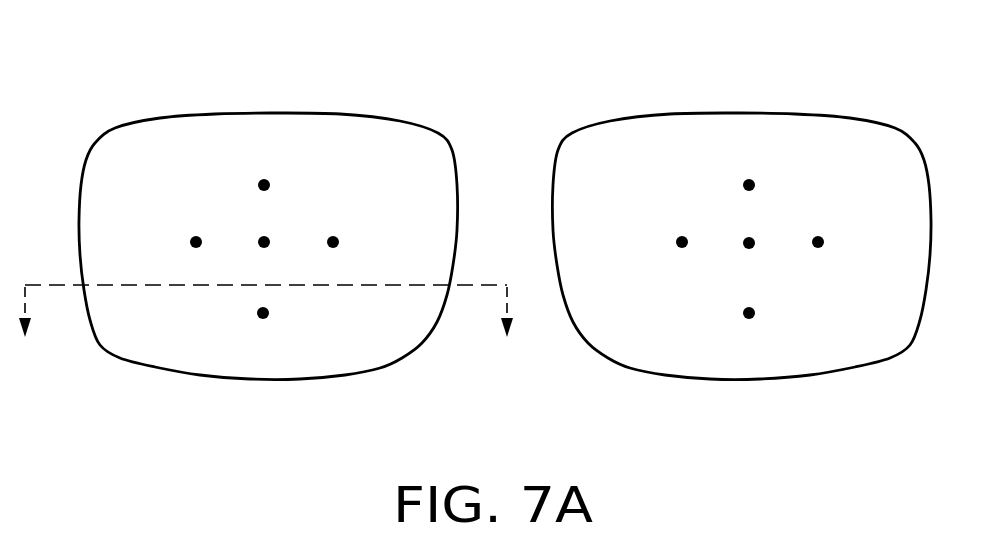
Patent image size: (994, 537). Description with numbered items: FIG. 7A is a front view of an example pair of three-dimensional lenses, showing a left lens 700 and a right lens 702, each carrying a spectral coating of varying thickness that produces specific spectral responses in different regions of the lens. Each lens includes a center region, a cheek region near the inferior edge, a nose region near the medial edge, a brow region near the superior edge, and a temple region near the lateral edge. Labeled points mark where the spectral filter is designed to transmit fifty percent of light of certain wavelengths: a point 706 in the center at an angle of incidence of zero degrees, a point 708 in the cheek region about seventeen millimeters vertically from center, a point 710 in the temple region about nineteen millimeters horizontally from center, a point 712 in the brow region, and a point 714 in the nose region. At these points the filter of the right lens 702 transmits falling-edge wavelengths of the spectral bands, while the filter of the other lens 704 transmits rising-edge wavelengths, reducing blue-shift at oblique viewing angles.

The left lens 700 is at (87, 90).
The right lens 702 is at (747, 380).
The lens 704 is at (222, 380).
The point in the center 706 is at (264, 236).
The point within the cheek region 708 is at (269, 313).
The point within the temple region 710 is at (197, 248).
The point within the brow region 712 is at (257, 185).
The point within the nose region 714 is at (332, 236).